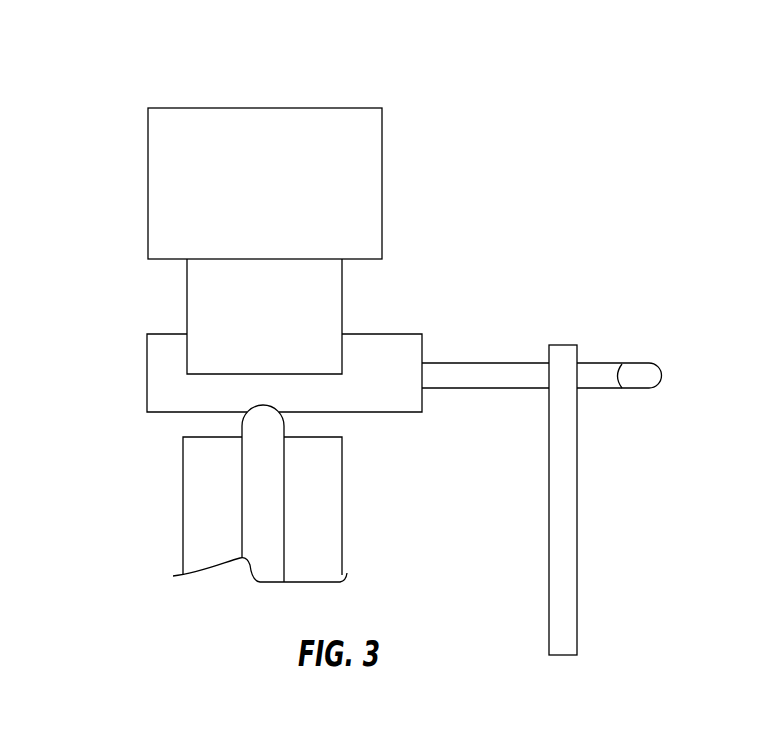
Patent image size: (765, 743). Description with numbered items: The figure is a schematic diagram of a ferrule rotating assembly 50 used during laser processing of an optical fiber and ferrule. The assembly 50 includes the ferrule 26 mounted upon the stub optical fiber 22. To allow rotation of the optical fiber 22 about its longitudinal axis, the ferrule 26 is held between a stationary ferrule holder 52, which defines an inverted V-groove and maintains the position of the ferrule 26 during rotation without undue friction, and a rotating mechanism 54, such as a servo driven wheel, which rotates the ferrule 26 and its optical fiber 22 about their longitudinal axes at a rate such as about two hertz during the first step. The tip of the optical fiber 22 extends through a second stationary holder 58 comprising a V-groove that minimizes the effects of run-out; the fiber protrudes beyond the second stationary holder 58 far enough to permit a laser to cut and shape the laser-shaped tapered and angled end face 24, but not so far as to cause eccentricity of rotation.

The ferrule rotating assembly 50 is at (92, 113).
The stationary ferrule holder 52 is at (278, 128).
The ferrule 26 is at (159, 360).
The stub optical fiber 22 is at (470, 363).
The laser-shaped tapered and angled end face 24 is at (621, 373).
The second stationary holder 58 is at (560, 471).
The rotating mechanism 54 is at (200, 525).